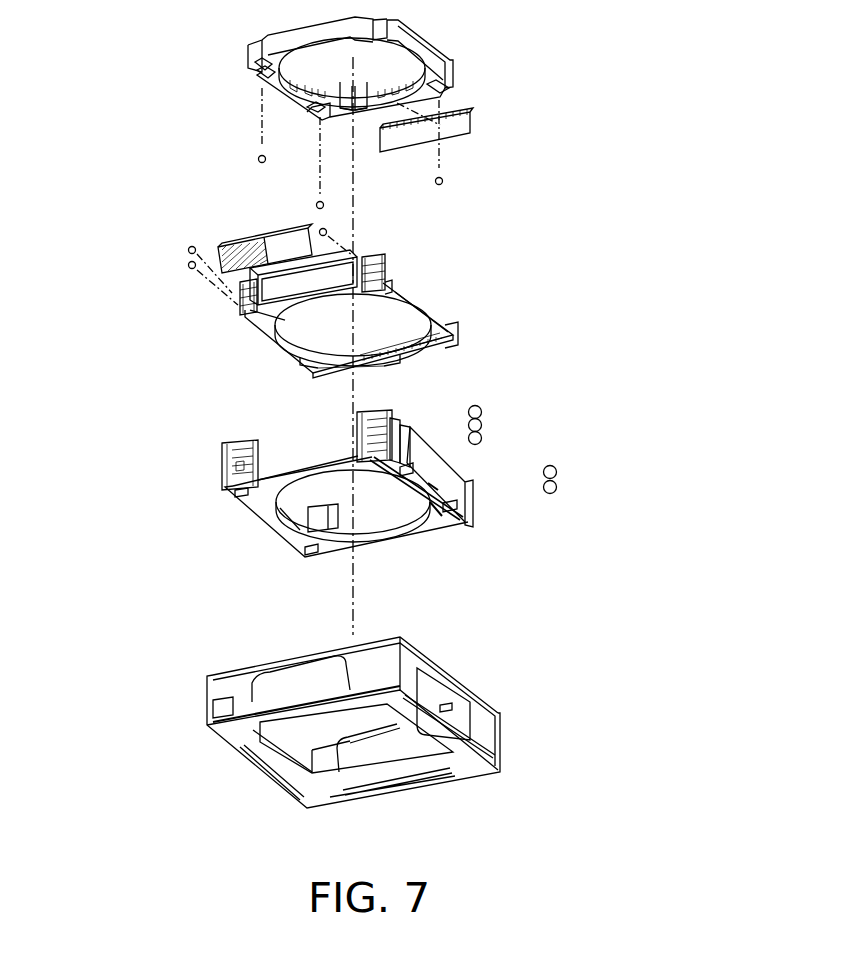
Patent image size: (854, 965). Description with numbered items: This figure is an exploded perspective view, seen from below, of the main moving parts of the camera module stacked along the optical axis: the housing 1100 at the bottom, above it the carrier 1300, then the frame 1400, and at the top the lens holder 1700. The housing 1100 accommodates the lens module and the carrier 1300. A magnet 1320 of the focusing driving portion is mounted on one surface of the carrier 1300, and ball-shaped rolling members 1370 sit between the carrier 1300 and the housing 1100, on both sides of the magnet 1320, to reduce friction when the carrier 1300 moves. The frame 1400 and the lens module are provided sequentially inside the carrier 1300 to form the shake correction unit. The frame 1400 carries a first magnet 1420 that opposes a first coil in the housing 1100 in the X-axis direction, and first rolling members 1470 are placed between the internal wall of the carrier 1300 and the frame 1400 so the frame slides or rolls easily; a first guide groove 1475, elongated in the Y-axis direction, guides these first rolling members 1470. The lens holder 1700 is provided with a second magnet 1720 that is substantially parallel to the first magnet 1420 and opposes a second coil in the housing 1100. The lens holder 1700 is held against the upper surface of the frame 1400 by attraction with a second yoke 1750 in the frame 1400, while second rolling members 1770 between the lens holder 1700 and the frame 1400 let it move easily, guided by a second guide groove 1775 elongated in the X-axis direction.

The lens holder 1700 is at (222, 50).
The second guide groove 1775 is at (505, 76).
The second magnet 1720 is at (471, 121).
The second rolling member 1770 is at (316, 205).
The first magnet 1420 is at (258, 243).
The first rolling member 1470 is at (328, 232).
The first guide groove 1475 is at (388, 265).
The second yoke 1750 is at (425, 310).
The frame 1400 is at (240, 338).
The rolling member 1370 is at (482, 410).
The magnet 1320 is at (462, 492).
The carrier 1300 is at (220, 508).
The housing 1100 is at (224, 764).